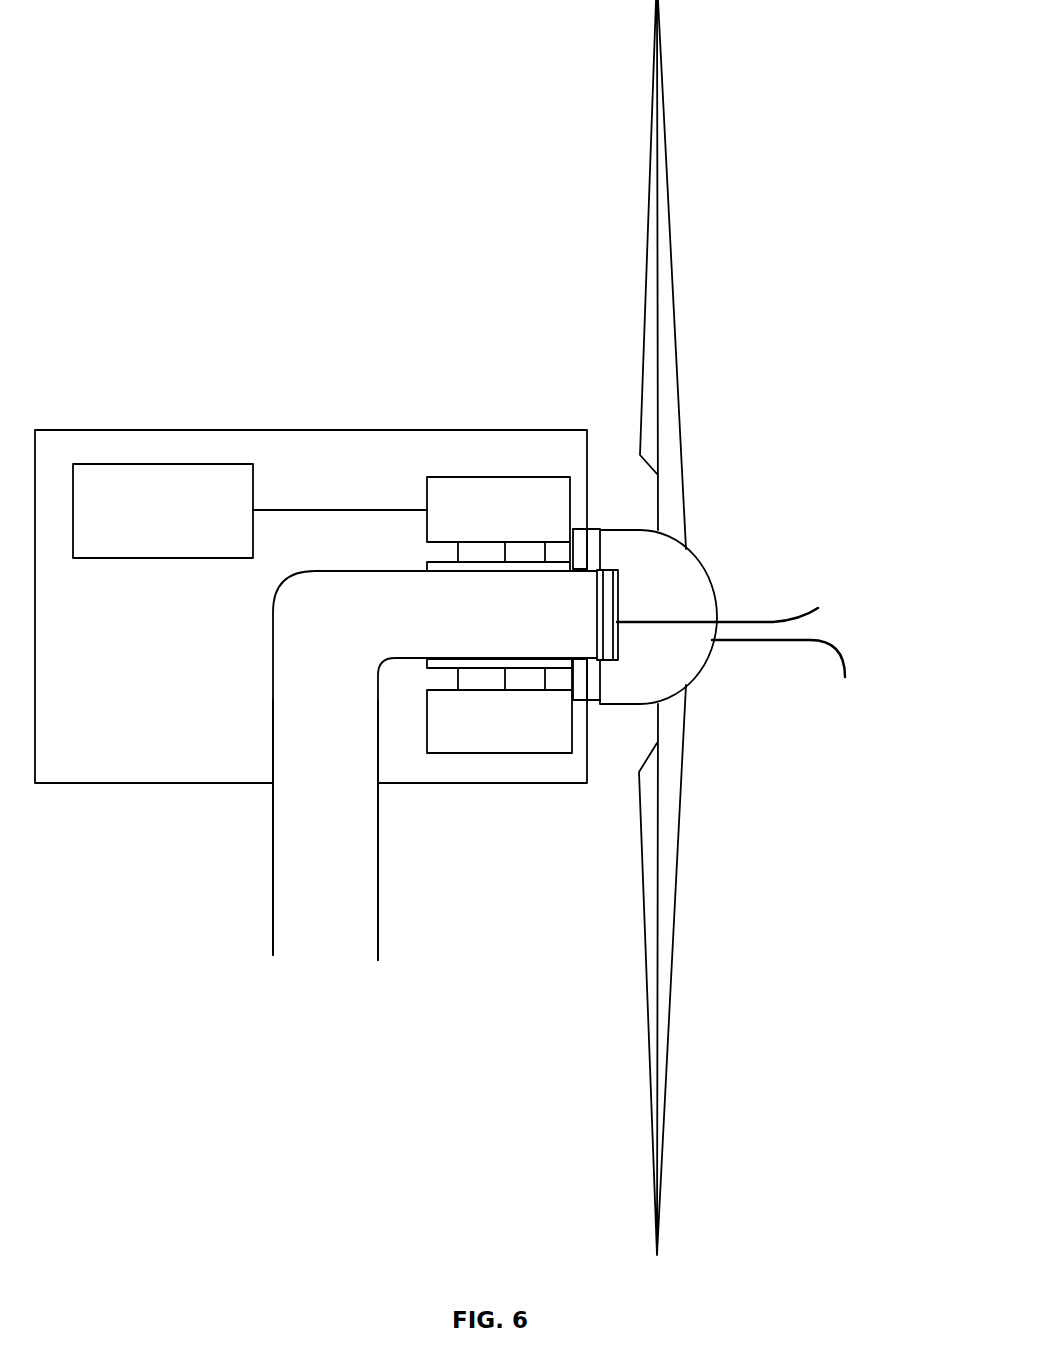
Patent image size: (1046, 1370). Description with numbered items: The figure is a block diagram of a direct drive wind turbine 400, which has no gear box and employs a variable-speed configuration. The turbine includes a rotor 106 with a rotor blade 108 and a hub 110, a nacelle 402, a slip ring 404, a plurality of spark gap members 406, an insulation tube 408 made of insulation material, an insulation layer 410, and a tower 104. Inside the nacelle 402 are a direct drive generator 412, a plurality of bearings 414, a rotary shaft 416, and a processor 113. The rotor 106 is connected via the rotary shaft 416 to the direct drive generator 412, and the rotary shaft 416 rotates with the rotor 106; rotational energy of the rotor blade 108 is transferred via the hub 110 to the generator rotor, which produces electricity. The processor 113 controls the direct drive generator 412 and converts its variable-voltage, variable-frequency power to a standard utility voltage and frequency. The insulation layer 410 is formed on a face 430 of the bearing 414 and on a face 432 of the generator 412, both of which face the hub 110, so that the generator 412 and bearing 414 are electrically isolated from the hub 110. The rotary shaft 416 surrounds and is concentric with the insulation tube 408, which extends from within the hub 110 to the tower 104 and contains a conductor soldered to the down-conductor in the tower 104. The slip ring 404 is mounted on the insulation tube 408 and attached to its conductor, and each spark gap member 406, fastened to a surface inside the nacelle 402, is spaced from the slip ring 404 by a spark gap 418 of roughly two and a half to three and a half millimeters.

The direct drive wind turbine 400 is at (355, 262).
The nacelle 402 is at (248, 430).
The processor 113 is at (133, 464).
The slip ring 404 is at (720, 615).
The spark gap member 406 is at (600, 555).
The insulation tube 408 is at (340, 571).
The insulation layer 410 is at (582, 560).
The direct drive generator 412 is at (455, 477).
The bearing 414 is at (458, 550).
The rotary shaft 416 is at (427, 565).
The spark gap 418 is at (603, 565).
The face of bearing 430 is at (601, 528).
The face of generator 432 is at (579, 557).
The tower 104 is at (378, 888).
The rotor 106 is at (866, 500).
The rotor blade 108 is at (680, 857).
The hub 110 is at (785, 675).